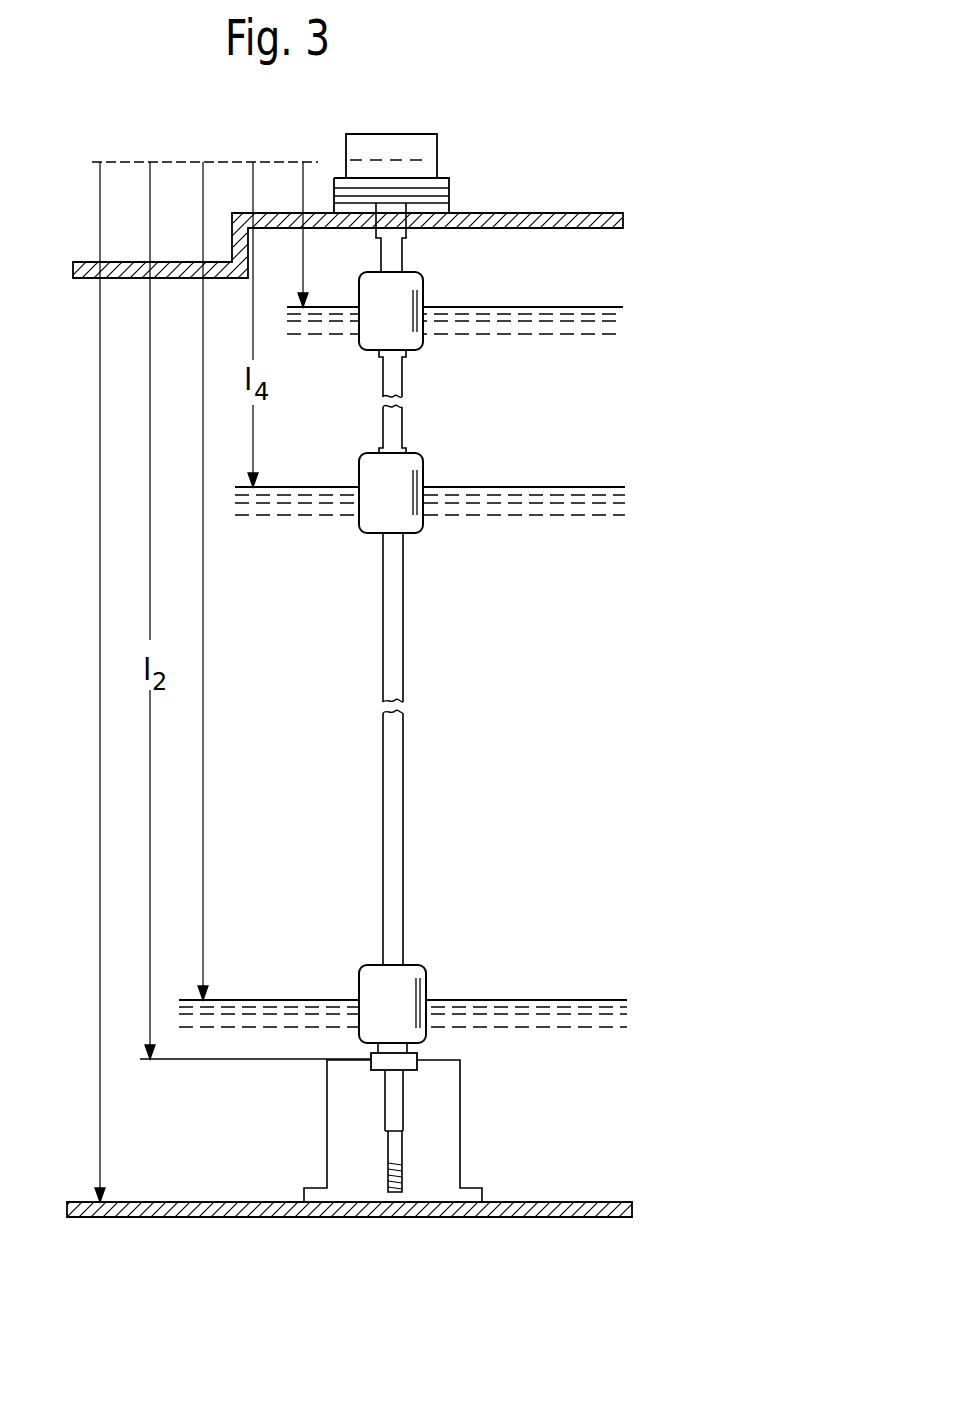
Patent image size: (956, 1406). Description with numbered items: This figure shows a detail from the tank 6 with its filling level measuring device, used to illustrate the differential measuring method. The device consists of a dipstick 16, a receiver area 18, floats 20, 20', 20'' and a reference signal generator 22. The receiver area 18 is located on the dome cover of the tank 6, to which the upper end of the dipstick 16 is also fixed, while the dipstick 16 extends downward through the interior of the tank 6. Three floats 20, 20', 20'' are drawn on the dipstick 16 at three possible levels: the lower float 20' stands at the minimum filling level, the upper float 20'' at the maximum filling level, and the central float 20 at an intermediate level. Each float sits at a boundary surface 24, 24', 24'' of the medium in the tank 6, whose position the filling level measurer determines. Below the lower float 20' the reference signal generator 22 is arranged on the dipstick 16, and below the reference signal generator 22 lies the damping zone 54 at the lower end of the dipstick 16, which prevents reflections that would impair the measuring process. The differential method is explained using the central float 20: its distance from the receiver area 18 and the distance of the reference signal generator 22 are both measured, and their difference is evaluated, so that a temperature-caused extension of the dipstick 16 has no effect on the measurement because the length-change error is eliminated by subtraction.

The tank 6 is at (560, 215).
The receiver area 18 is at (428, 137).
The dipstick 16 is at (397, 753).
The float 20 is at (437, 527).
The lower float 20' is at (444, 964).
The upper float 20'' is at (437, 338).
The boundary surface 24 is at (476, 468).
The boundary surface 24' is at (447, 975).
The boundary surface 24'' is at (504, 292).
The reference signal generator 22 is at (408, 1063).
The damping zone 54 is at (403, 1177).